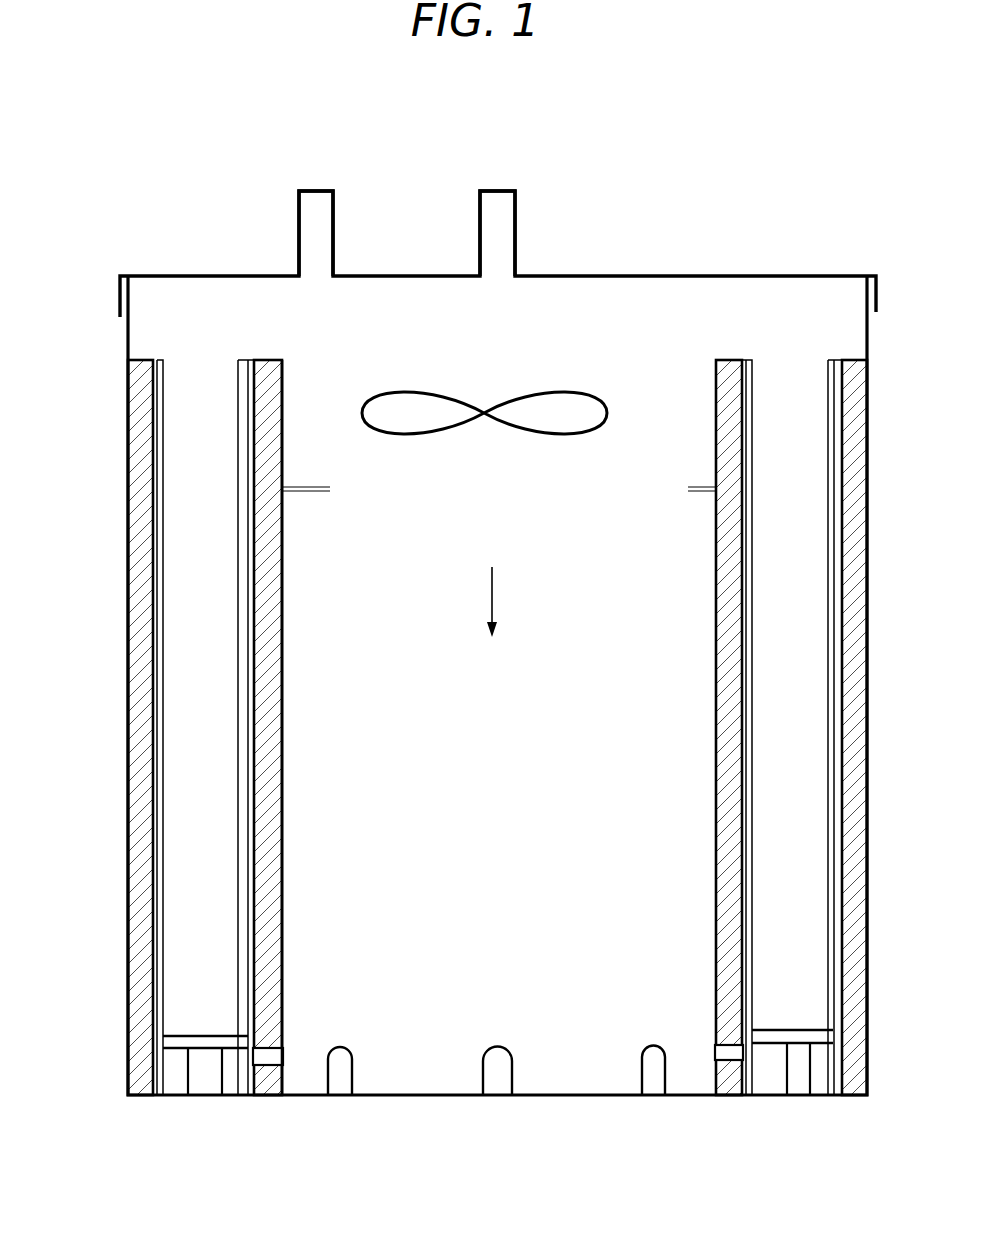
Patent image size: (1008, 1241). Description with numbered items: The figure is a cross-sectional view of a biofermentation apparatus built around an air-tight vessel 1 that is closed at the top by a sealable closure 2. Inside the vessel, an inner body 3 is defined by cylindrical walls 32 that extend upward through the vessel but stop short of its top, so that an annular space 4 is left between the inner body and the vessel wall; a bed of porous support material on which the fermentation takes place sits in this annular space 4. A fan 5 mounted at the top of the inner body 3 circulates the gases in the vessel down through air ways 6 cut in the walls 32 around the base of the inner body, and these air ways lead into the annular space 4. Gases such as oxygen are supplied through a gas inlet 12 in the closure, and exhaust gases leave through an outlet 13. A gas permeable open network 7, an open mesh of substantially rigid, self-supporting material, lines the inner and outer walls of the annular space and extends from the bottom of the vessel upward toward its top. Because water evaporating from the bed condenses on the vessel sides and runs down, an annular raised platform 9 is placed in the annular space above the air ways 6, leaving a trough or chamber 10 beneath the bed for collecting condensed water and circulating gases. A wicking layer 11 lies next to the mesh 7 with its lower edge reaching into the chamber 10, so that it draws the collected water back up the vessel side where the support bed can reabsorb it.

The air-tight vessel 1 is at (868, 863).
The sealable closure 2 is at (784, 275).
The inner body 3 is at (623, 597).
The annular space 4 is at (778, 549).
The fan 5 is at (408, 441).
The air ways 6 is at (496, 1060).
The gas permeable open network 7 is at (855, 435).
The annular raised platform 9 is at (187, 1042).
The trough or chamber 10 is at (178, 1085).
The wicking layer 11 is at (752, 677).
The gas inlet 12 is at (498, 189).
The outlet 13 is at (316, 190).
The cylindrical walls 32 is at (284, 806).